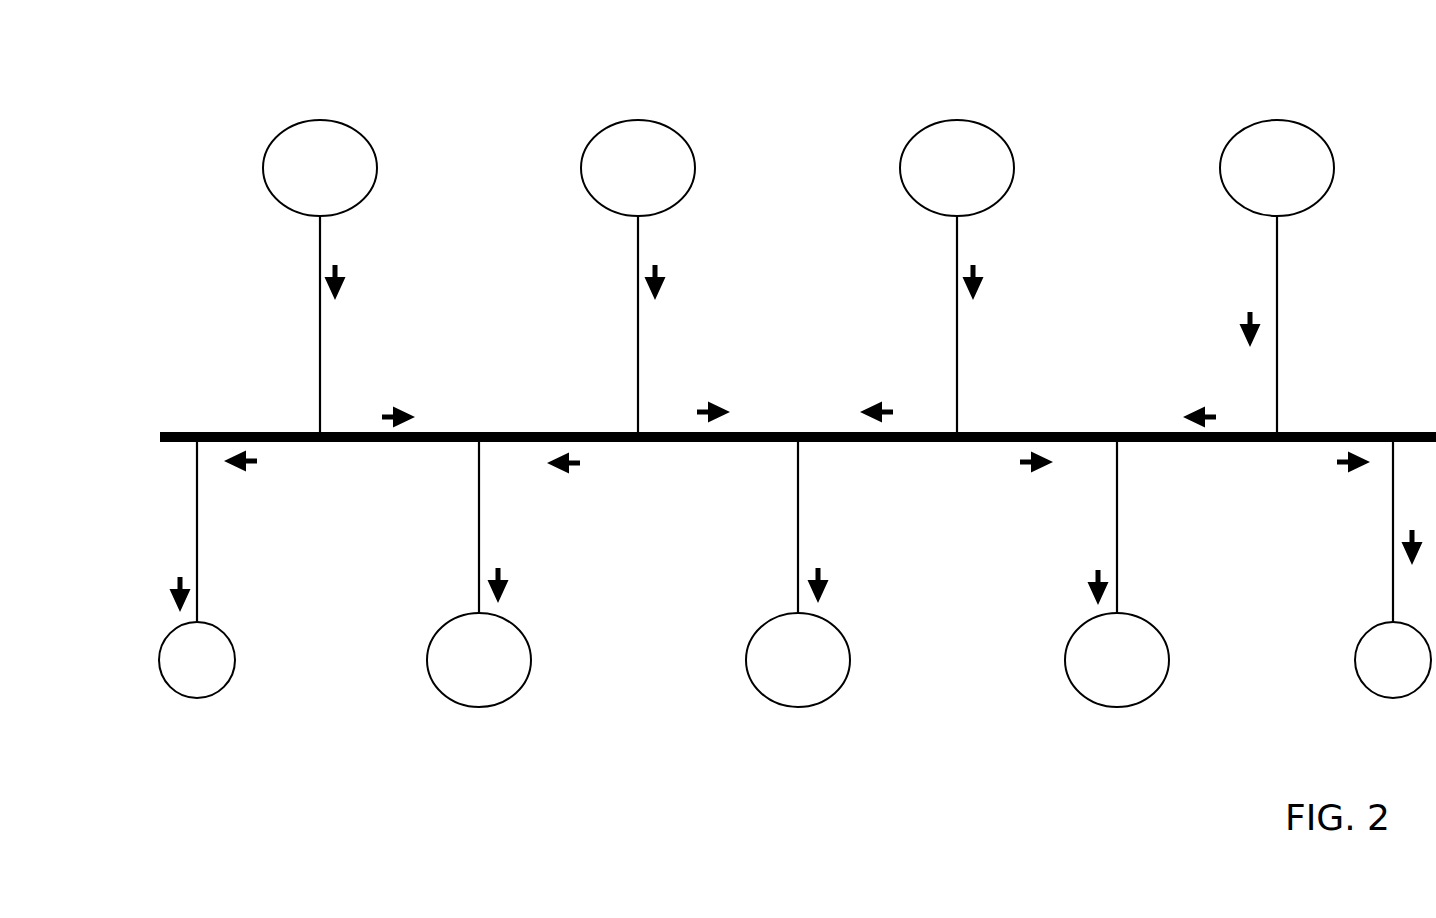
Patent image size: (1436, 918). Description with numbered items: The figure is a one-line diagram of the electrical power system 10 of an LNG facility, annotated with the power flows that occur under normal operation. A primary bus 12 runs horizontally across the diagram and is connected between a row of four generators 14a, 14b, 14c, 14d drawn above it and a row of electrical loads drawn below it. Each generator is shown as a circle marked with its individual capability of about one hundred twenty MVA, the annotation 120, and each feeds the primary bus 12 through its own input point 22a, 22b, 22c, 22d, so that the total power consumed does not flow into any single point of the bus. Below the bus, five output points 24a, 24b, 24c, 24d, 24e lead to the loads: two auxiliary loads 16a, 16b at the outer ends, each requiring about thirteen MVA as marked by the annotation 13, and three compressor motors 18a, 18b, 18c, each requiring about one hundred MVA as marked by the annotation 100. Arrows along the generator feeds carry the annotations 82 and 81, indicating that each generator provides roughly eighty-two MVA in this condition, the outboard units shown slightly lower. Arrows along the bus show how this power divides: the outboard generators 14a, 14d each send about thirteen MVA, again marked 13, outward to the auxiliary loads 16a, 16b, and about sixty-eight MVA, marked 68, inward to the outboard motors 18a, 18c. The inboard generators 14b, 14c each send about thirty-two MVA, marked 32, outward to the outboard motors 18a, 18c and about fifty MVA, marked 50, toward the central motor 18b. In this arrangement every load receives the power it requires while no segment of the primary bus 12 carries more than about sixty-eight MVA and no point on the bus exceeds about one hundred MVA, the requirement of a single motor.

The electrical power system 10 is at (797, 459).
The primary bus 12 is at (1347, 432).
The generator 14a is at (277, 145).
The generator 14b is at (595, 153).
The generator 14c is at (913, 150).
The generator 14d is at (1240, 150).
The auxiliary load 16a is at (220, 673).
The auxiliary load 16b is at (1373, 680).
The motor 18a is at (477, 693).
The motor 18b is at (796, 693).
The motor 18c is at (1112, 693).
The input point 22a is at (320, 433).
The input point 22b is at (636, 432).
The input point 22c is at (957, 432).
The input point 22d is at (1276, 432).
The output point 24a is at (197, 443).
The output point 24b is at (479, 443).
The output point 24c is at (798, 443).
The output point 24d is at (1117, 442).
The output point 24e is at (1393, 442).
The source output value 120 is at (799, 168).
The consumer demand value 100 is at (798, 604).
The flow value 13 is at (803, 560).
The flow value 81 is at (775, 305).
The flow value 82 is at (788, 285).
The flow value 68 is at (800, 416).
The flow value 50 is at (799, 416).
The flow value 32 is at (800, 461).